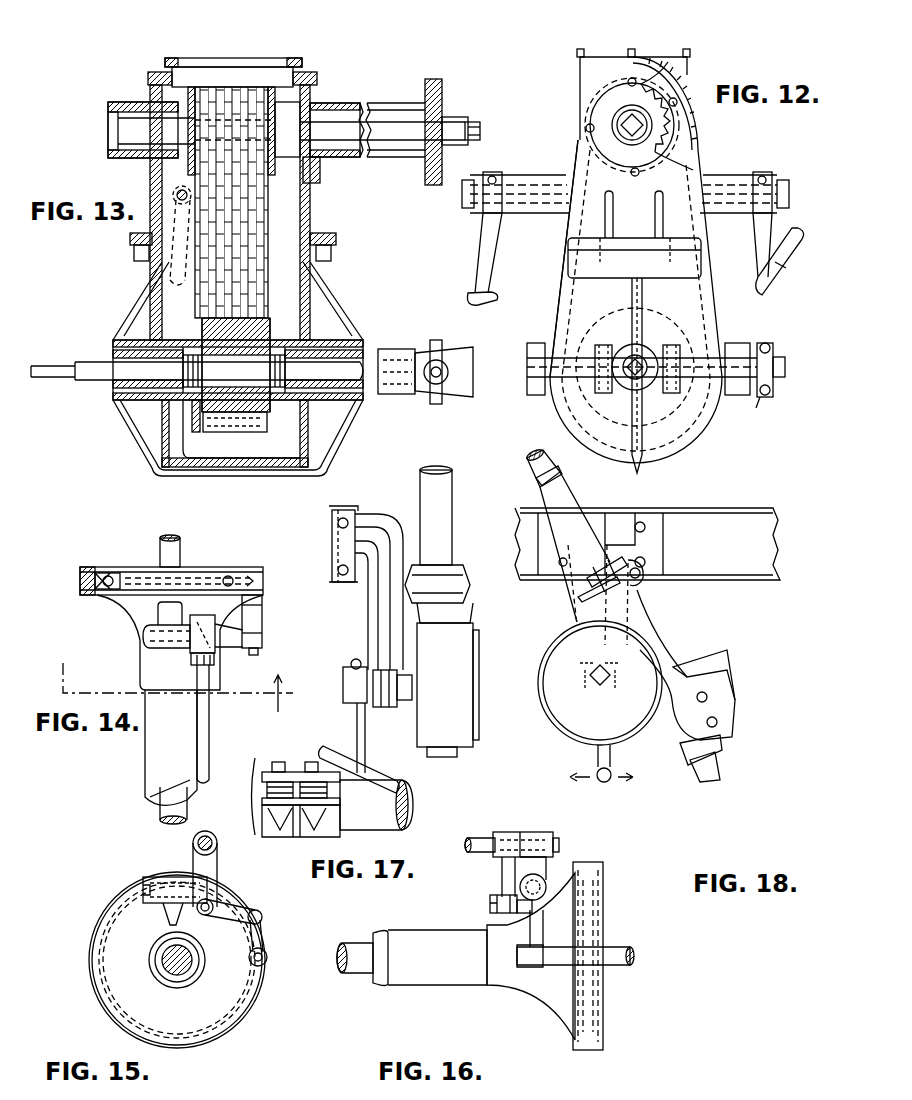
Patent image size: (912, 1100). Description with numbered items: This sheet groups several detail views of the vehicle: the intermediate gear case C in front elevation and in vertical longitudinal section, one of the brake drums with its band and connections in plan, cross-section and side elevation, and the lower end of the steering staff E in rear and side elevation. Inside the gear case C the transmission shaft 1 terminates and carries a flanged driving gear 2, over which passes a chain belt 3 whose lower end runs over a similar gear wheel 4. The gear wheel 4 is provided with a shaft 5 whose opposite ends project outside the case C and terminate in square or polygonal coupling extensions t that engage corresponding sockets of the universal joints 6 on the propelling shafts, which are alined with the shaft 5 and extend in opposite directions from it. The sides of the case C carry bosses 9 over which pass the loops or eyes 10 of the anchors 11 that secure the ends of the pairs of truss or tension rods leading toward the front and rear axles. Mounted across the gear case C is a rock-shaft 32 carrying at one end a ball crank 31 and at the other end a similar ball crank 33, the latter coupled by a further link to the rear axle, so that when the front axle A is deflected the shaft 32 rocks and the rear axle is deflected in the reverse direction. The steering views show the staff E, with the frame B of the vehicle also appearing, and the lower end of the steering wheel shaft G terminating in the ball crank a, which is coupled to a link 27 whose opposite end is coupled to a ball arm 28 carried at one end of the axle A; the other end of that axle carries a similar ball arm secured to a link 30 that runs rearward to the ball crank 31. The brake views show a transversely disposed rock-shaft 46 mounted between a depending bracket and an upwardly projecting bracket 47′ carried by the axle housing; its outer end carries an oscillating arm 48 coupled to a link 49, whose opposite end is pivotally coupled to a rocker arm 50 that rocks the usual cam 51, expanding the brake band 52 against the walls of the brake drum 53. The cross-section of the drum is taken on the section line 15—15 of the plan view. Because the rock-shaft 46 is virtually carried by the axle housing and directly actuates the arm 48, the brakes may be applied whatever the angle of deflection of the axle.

In FIG. 13, the transmission shaft 1 is at (440, 130).
In FIG. 12, the transmission shaft 1 is at (625, 122).
In FIG. 13, the flanged driving gear 2 is at (271, 100).
In FIG. 12, the flanged driving gear 2 is at (658, 107).
In FIG. 13, the chain belt 3 is at (248, 226).
In FIG. 12, the chain belt 3 is at (690, 170).
In FIG. 13, the gear wheel 4 is at (243, 430).
In FIG. 12, the gear wheel 4 is at (673, 417).
In FIG. 13, the shaft 5 is at (96, 382).
In FIG. 13, the universal joints 6 is at (398, 356).
In FIG. 12, the bosses 9 is at (758, 398).
In FIG. 12, the loops or eyes 10 is at (786, 366).
In FIG. 12, the anchors 11 is at (770, 343).
In FIG. 14, the section line 15— 15 is at (172, 682).
In FIG. 17, the link 27 is at (372, 762).
In FIG. 17, the ball arm 28 is at (304, 762).
In FIG. 12, the link 30 is at (798, 262).
In FIG. 13, the ball crank 31 is at (168, 279).
In FIG. 12, the ball crank 31 is at (768, 262).
In FIG. 13, the rock-shaft 32 is at (176, 193).
In FIG. 12, the rock-shaft 32 is at (780, 186).
In FIG. 12, the ball crank 33 is at (486, 232).
In FIG. 14, the rock-shaft 46 is at (210, 746).
In FIG. 15, the rock-shaft 46 is at (193, 845).
In FIG. 16, the rock-shaft 46 is at (471, 836).
In FIG. 14, the bracket 47′ is at (200, 620).
In FIG. 15, the bracket 47′ is at (128, 862).
In FIG. 16, the bracket 47′ is at (548, 833).
In FIG. 14, the oscillating arm 48 is at (210, 657).
In FIG. 15, the oscillating arm 48 is at (216, 876).
In FIG. 16, the oscillating arm 48 is at (500, 866).
In FIG. 14, the link 49 is at (240, 644).
In FIG. 15, the link 49 is at (262, 915).
In FIG. 16, the link 49 is at (490, 905).
In FIG. 14, the rocker arm 50 is at (262, 622).
In FIG. 15, the rocker arm 50 is at (272, 940).
In FIG. 16, the rocker arm 50 is at (537, 927).
In FIG. 15, the cam 51 is at (265, 964).
In FIG. 14, the brake band 52 is at (97, 573).
In FIG. 15, the brake band 52 is at (248, 1012).
In FIG. 14, the brake drum 53 is at (80, 580).
In FIG. 15, the brake drum 53 is at (225, 1038).
In FIG. 16, the brake drum 53 is at (598, 907).
In FIG. 14, the front axle A is at (145, 782).
In FIG. 17, the front axle A is at (413, 797).
In FIG. 15, the front axle A is at (170, 980).
In FIG. 16, the front axle A is at (422, 977).
In FIG. 17, the frame B is at (332, 538).
In FIG. 18, the frame B is at (775, 510).
In FIG. 13, the intermediate gear case C is at (312, 206).
In FIG. 12, the intermediate gear case C is at (560, 176).
In FIG. 17, the steering staff E is at (452, 530).
In FIG. 18, the steering staff E is at (572, 503).
In FIG. 17, the steering wheel shaft G is at (444, 470).
In FIG. 18, the steering wheel shaft G is at (535, 464).
In FIG. 17, the ball crank a is at (358, 718).
In FIG. 18, the ball crank a is at (597, 760).
In FIG. 13, the coupling extensions t is at (55, 380).
In FIG. 12, the coupling extensions t is at (633, 380).